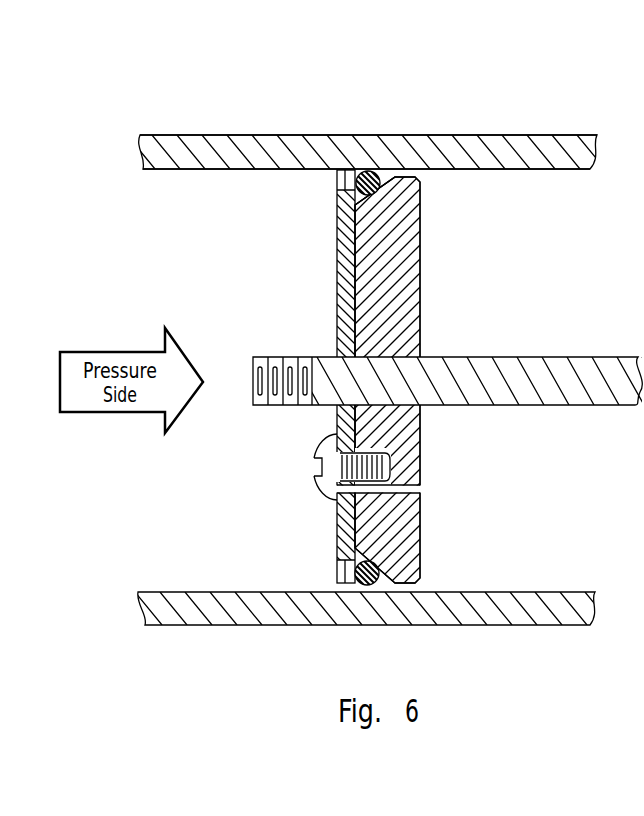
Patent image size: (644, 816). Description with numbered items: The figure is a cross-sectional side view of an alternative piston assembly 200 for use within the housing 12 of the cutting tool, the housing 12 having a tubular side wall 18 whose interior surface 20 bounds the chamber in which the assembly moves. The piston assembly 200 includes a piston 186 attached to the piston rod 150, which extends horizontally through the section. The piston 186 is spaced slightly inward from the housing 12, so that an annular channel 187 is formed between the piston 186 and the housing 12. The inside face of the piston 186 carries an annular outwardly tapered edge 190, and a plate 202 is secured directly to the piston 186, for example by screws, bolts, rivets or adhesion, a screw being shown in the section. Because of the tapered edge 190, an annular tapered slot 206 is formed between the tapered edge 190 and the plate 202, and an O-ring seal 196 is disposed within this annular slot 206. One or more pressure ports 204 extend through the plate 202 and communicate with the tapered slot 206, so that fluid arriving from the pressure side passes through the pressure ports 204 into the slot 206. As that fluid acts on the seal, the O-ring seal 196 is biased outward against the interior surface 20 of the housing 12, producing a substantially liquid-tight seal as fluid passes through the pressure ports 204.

The housing 12 is at (270, 140).
The tubular side wall 18 is at (448, 142).
The interior surface 20 is at (500, 170).
The piston rod 150 is at (538, 357).
The piston 186 is at (413, 255).
The annular channel 187 is at (407, 590).
The annular outwardly tapered edge 190 is at (337, 560).
The O-ring seal 196 is at (375, 170).
The piston assembly 200 is at (195, 243).
The plate 202 is at (337, 270).
The pressure ports 204 is at (337, 187).
The annular tapered slot 206 is at (362, 207).